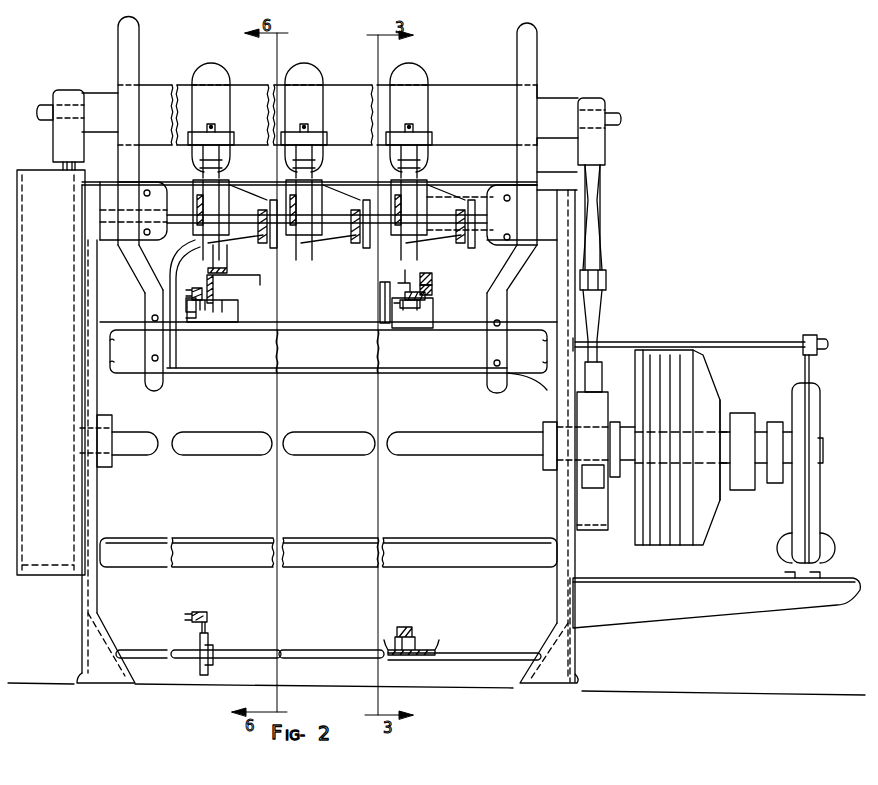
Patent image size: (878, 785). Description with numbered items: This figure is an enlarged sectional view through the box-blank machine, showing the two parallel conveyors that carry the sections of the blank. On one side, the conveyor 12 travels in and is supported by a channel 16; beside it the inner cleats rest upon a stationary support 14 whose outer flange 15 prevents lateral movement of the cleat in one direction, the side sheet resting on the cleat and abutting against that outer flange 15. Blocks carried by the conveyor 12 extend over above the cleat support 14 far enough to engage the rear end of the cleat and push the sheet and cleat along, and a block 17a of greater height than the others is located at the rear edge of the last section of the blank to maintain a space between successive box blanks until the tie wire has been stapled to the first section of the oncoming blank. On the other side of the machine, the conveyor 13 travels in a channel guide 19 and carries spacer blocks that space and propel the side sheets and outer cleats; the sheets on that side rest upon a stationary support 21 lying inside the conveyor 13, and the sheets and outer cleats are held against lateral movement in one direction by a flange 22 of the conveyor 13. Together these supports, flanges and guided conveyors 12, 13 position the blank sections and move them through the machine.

The conveyor 12 is at (421, 304).
The conveyor 13 is at (195, 292).
The stationary support 14 is at (426, 296).
The outer flange 15 is at (433, 288).
The channel 16 is at (405, 328).
The block 17a is at (433, 279).
The channel guide 19 is at (190, 312).
The stationary support 21 is at (214, 296).
The flange 22 is at (200, 283).